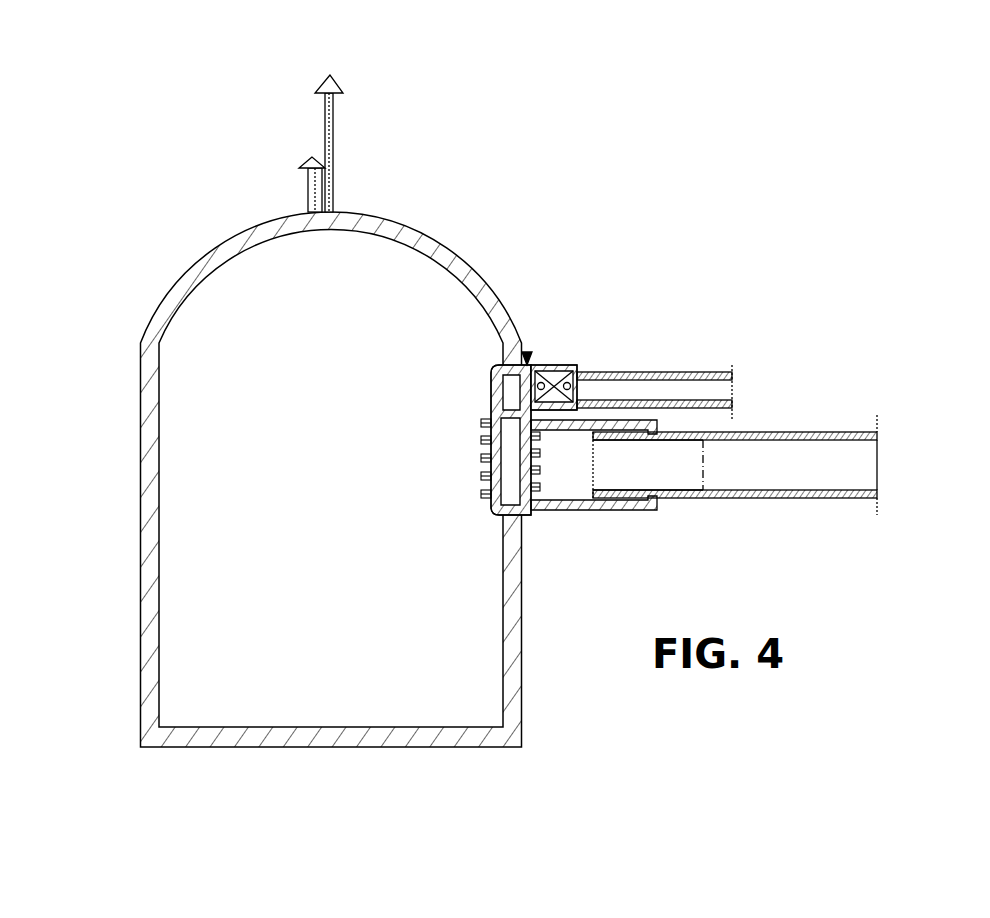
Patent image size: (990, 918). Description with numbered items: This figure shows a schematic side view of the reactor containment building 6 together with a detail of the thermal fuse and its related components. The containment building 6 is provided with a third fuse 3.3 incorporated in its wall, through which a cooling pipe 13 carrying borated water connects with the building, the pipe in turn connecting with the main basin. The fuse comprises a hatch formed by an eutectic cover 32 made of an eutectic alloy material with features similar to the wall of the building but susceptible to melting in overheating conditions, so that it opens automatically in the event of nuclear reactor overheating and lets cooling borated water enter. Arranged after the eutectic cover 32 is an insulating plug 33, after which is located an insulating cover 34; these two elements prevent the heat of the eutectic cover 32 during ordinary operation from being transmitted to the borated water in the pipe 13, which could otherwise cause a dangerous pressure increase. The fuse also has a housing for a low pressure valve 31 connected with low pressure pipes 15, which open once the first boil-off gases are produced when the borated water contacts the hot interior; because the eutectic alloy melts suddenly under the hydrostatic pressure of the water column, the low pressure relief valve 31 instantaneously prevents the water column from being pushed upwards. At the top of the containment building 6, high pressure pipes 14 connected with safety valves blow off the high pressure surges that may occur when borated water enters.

The containment building 6 is at (172, 295).
The high pressure pipes 14 is at (325, 122).
The third fuse 3.3 is at (529, 355).
The low pressure valve 31 is at (555, 370).
The low pressure pipes 15 is at (692, 370).
The cooling pipe 13 is at (785, 452).
The eutectic cover 32 is at (530, 512).
The insulating plug 33 is at (577, 488).
The insulating cover 34 is at (680, 478).